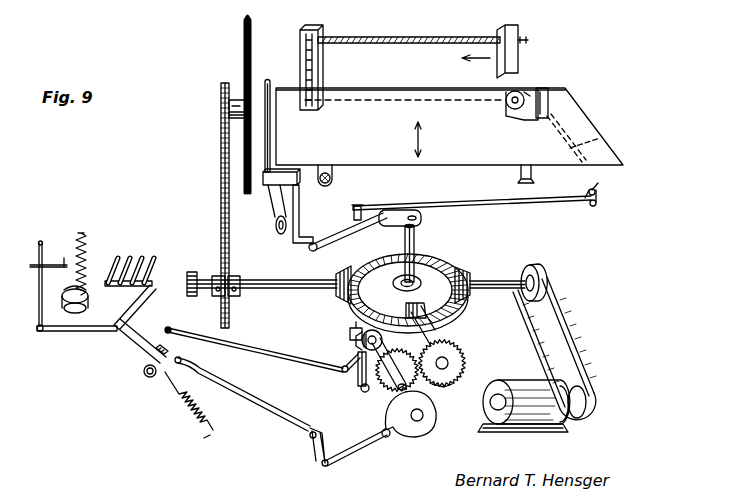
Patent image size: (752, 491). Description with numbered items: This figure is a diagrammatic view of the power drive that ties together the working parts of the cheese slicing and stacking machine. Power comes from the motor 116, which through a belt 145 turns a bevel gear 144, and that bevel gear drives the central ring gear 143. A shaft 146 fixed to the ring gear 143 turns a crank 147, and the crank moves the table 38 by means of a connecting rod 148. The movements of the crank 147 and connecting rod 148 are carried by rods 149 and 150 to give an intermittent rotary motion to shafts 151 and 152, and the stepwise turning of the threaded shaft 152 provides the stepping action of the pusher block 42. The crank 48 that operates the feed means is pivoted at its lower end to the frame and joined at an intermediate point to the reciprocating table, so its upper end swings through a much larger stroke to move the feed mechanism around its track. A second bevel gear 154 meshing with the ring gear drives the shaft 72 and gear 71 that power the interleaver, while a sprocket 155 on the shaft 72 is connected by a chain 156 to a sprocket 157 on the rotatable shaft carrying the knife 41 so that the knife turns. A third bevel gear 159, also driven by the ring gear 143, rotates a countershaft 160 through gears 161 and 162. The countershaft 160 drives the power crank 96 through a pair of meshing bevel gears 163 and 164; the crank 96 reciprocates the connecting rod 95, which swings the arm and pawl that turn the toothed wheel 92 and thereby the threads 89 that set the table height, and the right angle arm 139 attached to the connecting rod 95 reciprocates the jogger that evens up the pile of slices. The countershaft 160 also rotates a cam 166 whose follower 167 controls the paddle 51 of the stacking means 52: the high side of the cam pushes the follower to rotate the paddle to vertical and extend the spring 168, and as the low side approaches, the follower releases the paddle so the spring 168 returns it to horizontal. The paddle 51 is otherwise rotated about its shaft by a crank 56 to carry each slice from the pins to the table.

The table 38 is at (540, 130).
The knife 41 is at (245, 38).
The pusher block 42 is at (520, 28).
The crank 48 is at (270, 125).
The paddle 51 is at (136, 250).
The stacking means 52 is at (121, 359).
The crank 56 is at (249, 398).
The gear 71 is at (190, 271).
The shaft 72 is at (272, 288).
The threads 89 is at (78, 236).
The toothed wheel 92 is at (89, 304).
The connecting rod 95 is at (245, 351).
The crank 96 is at (358, 374).
The motor 116 is at (560, 425).
The right angle arm 139 is at (66, 332).
The ring gear 143 is at (437, 258).
The bevel gear 144 is at (478, 272).
The belt 145 is at (570, 322).
The shaft 146 is at (417, 244).
The crank 147 is at (398, 216).
The connecting rod 148 is at (340, 220).
The rod 149 is at (528, 200).
The rod 150 is at (600, 138).
The shaft 151 is at (376, 98).
The threaded shaft 152 is at (412, 38).
The second bevel gear 154 is at (336, 300).
The sprocket 155 is at (228, 277).
The chain 156 is at (221, 157).
The sprocket 157 is at (222, 100).
The third bevel gear 159 is at (447, 306).
The countershaft 160 is at (392, 390).
The gear 161 is at (462, 352).
The gear 162 is at (440, 385).
The bevel gear 163 is at (353, 333).
The bevel gear 164 is at (351, 342).
The cam 166 is at (431, 430).
The follower 167 is at (354, 451).
The spring 168 is at (184, 425).